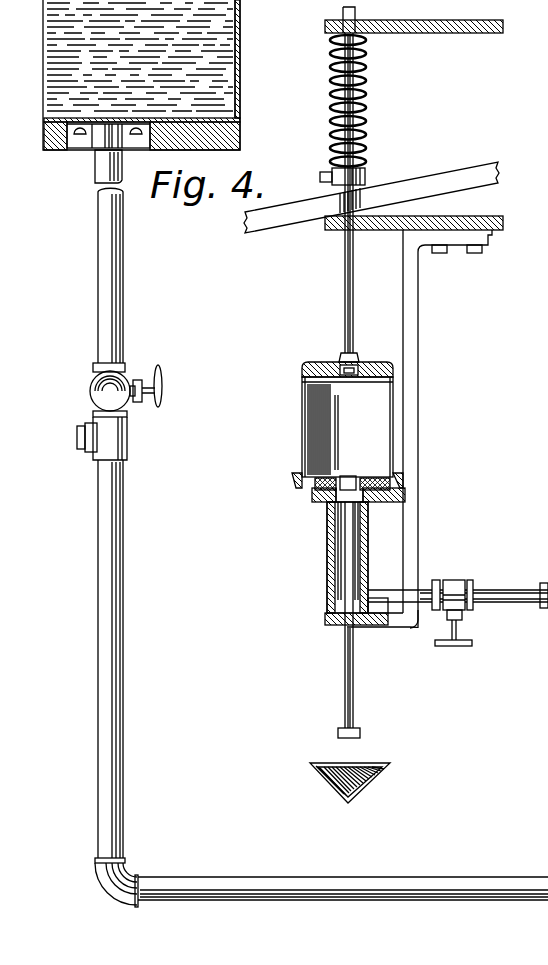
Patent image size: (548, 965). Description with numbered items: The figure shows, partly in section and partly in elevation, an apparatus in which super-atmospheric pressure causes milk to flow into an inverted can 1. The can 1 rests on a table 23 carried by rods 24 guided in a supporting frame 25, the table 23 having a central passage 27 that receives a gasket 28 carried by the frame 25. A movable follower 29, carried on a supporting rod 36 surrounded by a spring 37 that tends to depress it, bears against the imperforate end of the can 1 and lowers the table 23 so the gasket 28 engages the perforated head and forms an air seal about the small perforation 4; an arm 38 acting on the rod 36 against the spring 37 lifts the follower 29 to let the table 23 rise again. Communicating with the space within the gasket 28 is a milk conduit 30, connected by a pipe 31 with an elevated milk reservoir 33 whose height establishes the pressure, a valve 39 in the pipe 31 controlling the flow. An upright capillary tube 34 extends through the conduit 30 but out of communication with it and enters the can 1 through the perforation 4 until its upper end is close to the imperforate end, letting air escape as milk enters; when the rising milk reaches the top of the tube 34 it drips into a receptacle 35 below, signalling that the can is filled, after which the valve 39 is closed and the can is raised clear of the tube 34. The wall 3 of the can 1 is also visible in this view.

The can 1 is at (302, 438).
The cylinder lining 3 is at (310, 475).
The perforation 4 is at (352, 478).
The table 23 is at (300, 493).
The rods 24 is at (350, 672).
The supporting frame 25 is at (413, 503).
The central passage 27 is at (312, 500).
The gasket 28 is at (372, 480).
The movable follower 29 is at (303, 370).
The milk conduit 30 is at (330, 570).
The pipe 31 is at (505, 596).
The milk reservoir 33 is at (240, 78).
The tube 34 is at (348, 585).
The receptacle 35 is at (342, 795).
The supporting rod 36 is at (346, 300).
The spring 37 is at (364, 103).
The arm 38 is at (422, 187).
The valve 39 is at (451, 590).